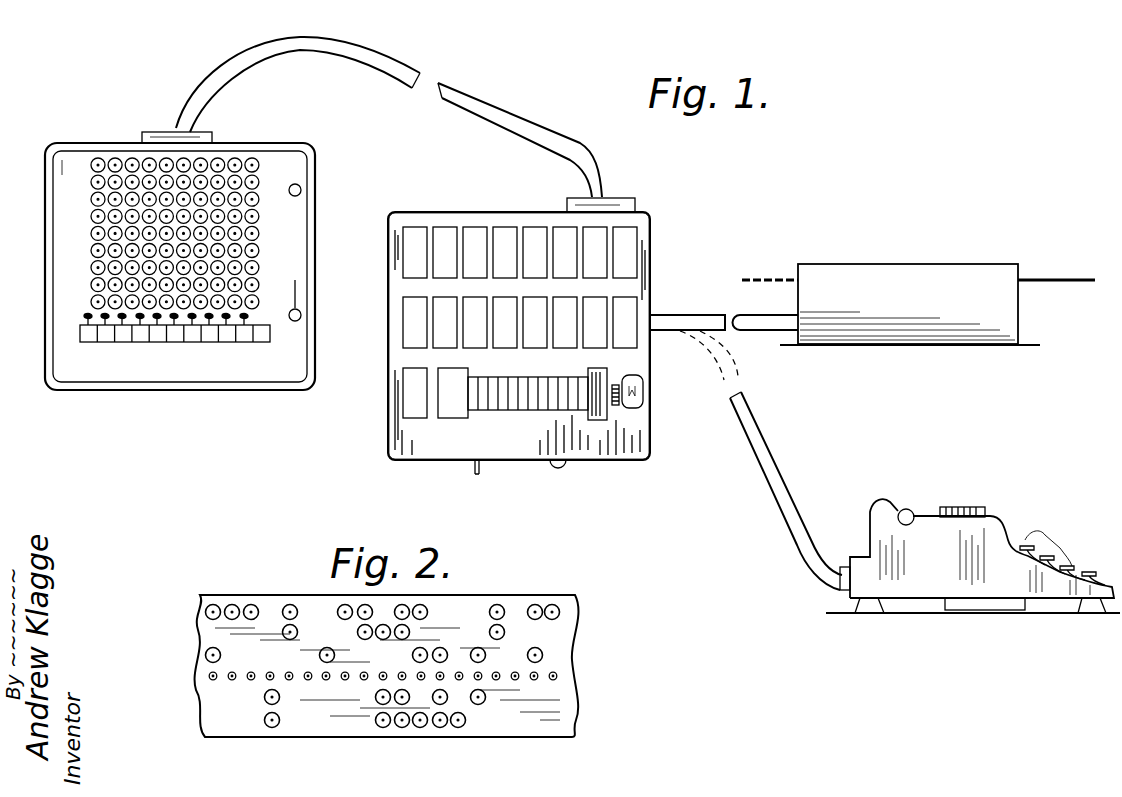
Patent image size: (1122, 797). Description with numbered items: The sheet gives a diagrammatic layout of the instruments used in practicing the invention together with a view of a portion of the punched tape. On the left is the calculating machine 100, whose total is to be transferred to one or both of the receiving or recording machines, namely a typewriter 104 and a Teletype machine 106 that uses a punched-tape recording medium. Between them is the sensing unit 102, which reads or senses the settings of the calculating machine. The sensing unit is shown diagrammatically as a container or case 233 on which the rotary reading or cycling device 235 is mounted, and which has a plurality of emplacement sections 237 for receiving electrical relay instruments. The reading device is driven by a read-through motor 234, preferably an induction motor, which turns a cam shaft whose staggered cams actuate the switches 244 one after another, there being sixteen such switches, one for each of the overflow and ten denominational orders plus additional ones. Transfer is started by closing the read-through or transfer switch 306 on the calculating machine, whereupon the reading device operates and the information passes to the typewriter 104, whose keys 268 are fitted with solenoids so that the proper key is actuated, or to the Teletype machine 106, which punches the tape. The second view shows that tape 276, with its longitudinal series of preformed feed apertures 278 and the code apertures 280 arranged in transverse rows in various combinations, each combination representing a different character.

In FIG. 1, the calculating machine 100 is at (210, 390).
In FIG. 1, the read-through switch 306 is at (302, 190).
In FIG. 1, the sensing unit 102 is at (387, 426).
In FIG. 1, the container or case 233 is at (637, 448).
In FIG. 1, the emplacement sections 237 is at (504, 236).
In FIG. 1, the rotary reading or cycling device 235 is at (519, 415).
In FIG. 1, the switches 244 is at (564, 381).
In FIG. 1, the read-through motor 234 is at (645, 384).
In FIG. 1, the Teletype machine 106 is at (895, 265).
In FIG. 1, the punched tape 276 is at (1090, 281).
In FIG. 2, the punched tape 276 is at (575, 712).
In FIG. 1, the typewriter 104 is at (902, 495).
In FIG. 1, the keys 268 is at (1032, 542).
In FIG. 2, the code apertures 280 is at (286, 604).
In FIG. 2, the feed apertures 278 is at (251, 682).